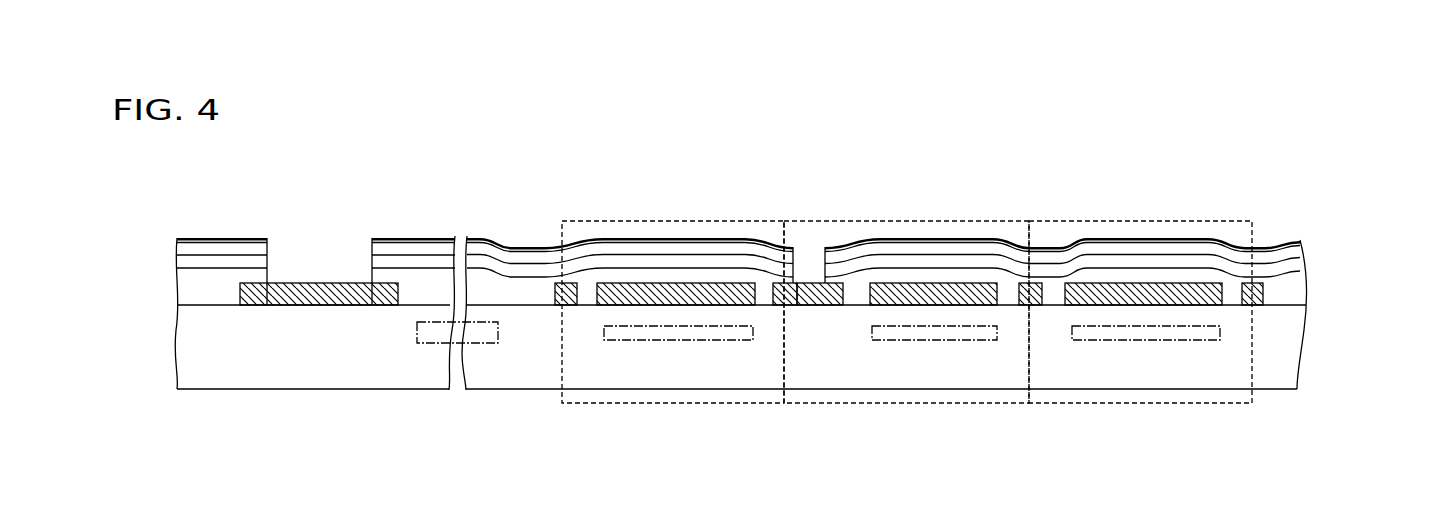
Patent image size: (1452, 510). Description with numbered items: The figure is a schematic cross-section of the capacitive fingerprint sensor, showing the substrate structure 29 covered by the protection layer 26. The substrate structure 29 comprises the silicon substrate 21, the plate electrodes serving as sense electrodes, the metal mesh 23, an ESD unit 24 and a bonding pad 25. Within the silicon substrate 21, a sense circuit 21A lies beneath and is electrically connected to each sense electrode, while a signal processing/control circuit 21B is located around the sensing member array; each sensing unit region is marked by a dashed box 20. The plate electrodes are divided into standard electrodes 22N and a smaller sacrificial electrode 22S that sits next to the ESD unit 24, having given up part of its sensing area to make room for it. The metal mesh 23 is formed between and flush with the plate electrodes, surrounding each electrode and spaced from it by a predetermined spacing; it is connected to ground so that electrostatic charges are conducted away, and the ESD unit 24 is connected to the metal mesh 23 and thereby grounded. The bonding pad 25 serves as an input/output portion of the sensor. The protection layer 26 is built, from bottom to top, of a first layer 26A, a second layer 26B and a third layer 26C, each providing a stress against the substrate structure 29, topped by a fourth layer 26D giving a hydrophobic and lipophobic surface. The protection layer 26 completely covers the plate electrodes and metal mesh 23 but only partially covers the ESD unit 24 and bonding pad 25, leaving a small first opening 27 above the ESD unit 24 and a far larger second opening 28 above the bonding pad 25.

The unit pixel region 20 is at (613, 219).
The silicon substrate 21 is at (1290, 335).
The sense circuit 21A is at (635, 340).
The signal processing/control circuit 21B is at (470, 345).
The standard electrode 22N is at (675, 305).
The sacrificial electrode 22S is at (928, 305).
The metal mesh 23 is at (572, 305).
The ESD unit 24 is at (833, 305).
The bonding pad 25 is at (325, 305).
The protection layer 26 is at (812, 260).
The first layer 26A is at (1295, 292).
The second layer 26B is at (1298, 263).
The third layer 26C is at (1300, 252).
The fourth layer 26D is at (1298, 240).
The first opening 27 is at (815, 262).
The second opening 28 is at (310, 260).
The substrate structure 29 is at (176, 304).